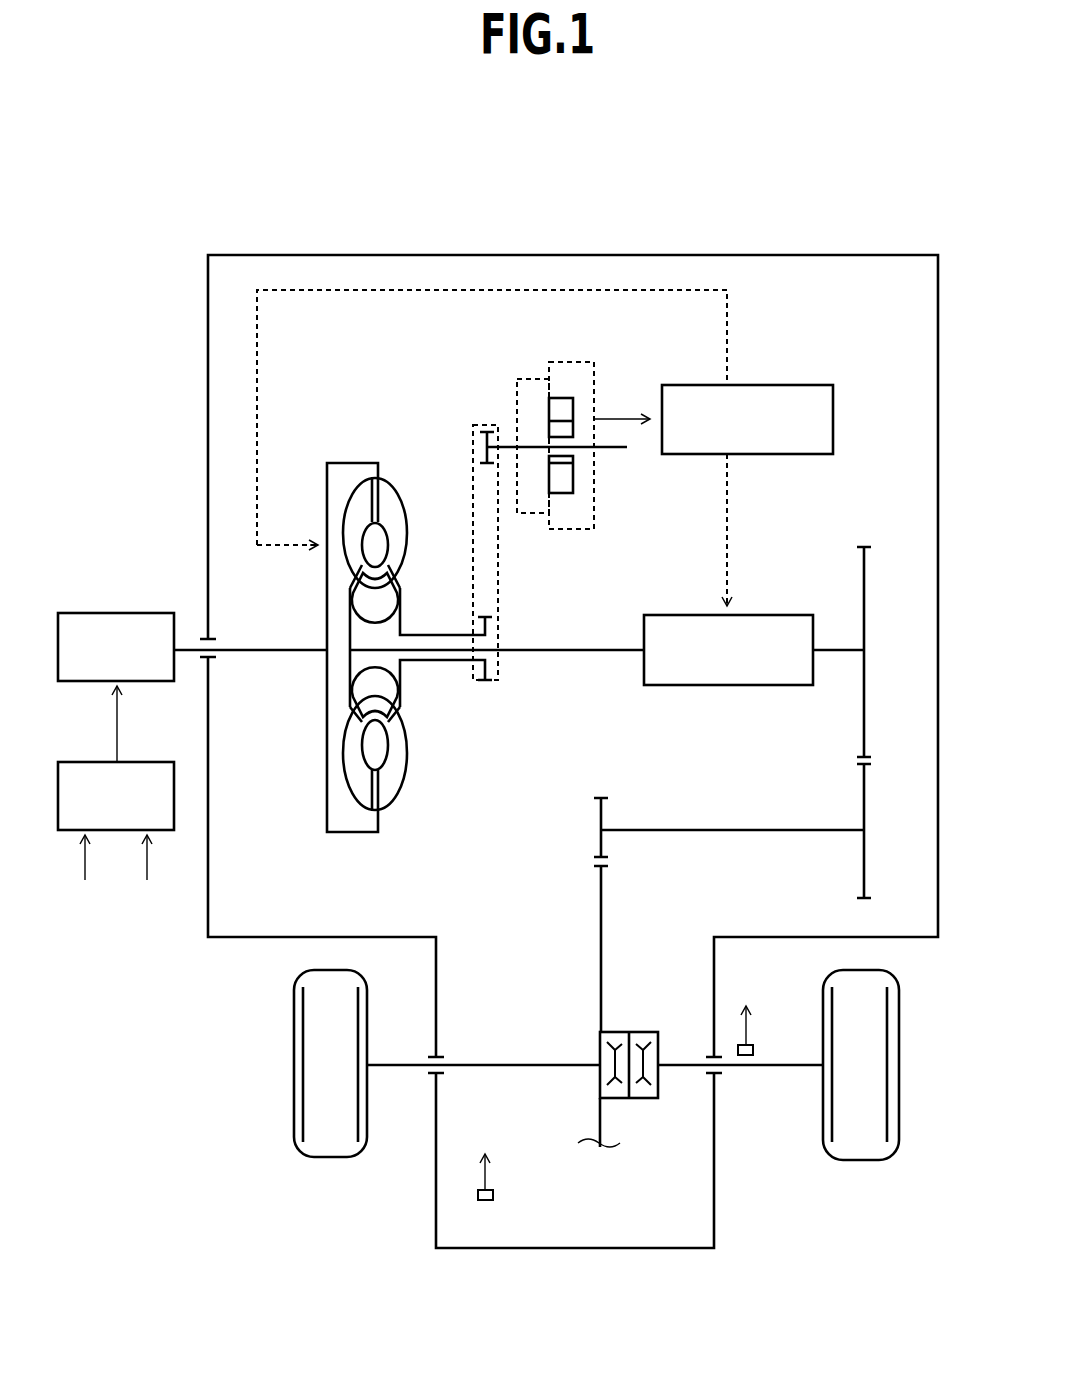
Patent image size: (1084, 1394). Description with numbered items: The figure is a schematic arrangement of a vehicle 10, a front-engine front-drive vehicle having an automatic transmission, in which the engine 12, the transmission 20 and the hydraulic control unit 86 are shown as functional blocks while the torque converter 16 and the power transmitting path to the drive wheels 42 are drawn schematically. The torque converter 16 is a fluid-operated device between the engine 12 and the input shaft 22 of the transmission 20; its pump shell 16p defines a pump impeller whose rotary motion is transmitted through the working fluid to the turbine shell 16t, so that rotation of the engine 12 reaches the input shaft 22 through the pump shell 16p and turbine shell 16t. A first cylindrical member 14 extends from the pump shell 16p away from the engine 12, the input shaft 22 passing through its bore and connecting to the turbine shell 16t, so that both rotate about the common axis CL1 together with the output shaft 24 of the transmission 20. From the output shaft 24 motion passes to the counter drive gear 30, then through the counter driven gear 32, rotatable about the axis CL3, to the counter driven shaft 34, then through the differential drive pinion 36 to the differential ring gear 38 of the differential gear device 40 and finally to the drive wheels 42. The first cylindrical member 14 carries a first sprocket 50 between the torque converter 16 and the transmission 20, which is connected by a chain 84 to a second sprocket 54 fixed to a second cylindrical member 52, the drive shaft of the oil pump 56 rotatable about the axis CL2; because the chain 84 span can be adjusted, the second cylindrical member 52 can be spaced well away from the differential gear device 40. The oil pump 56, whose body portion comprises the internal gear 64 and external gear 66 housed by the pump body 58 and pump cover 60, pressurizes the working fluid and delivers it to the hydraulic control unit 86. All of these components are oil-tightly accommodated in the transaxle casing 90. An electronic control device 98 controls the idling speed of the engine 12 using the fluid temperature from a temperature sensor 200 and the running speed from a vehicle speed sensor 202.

The vehicle 10 is at (760, 168).
The engine 12 is at (116, 625).
The first cylindrical member 14 is at (452, 662).
The torque converter 16 is at (380, 608).
The turbine shell 16t is at (345, 508).
The pump shell 16p is at (403, 778).
The transmission 20 is at (784, 626).
The input shaft 22 is at (572, 655).
The output shaft 24 is at (832, 648).
The counter drive gear 30 is at (860, 682).
The counter driven gear 32 is at (860, 850).
The counter driven shaft 34 is at (766, 828).
The differential drive pinion 36 is at (598, 812).
The differential ring gear 38 is at (598, 906).
The differential gear device 40 is at (638, 1118).
The drive wheels 42 is at (328, 1133).
The first sprocket 50 is at (476, 616).
The second cylindrical member 52 is at (612, 452).
The second sprocket 54 is at (484, 464).
The oil pump 56 is at (569, 455).
The pump body 58 is at (573, 530).
The pump cover 60 is at (528, 384).
The internal gear 64 is at (553, 430).
The external gear 66 is at (574, 410).
The chain 84 is at (473, 549).
The hydraulic control unit 86 is at (797, 397).
The transaxle casing 90 is at (208, 367).
The electronic control device 98 is at (78, 773).
The temperature sensor 200 is at (493, 1195).
The vehicle speed sensor 202 is at (753, 1050).
The common axis CL1 is at (880, 656).
The axis CL2 is at (640, 452).
The axis CL3 is at (586, 832).